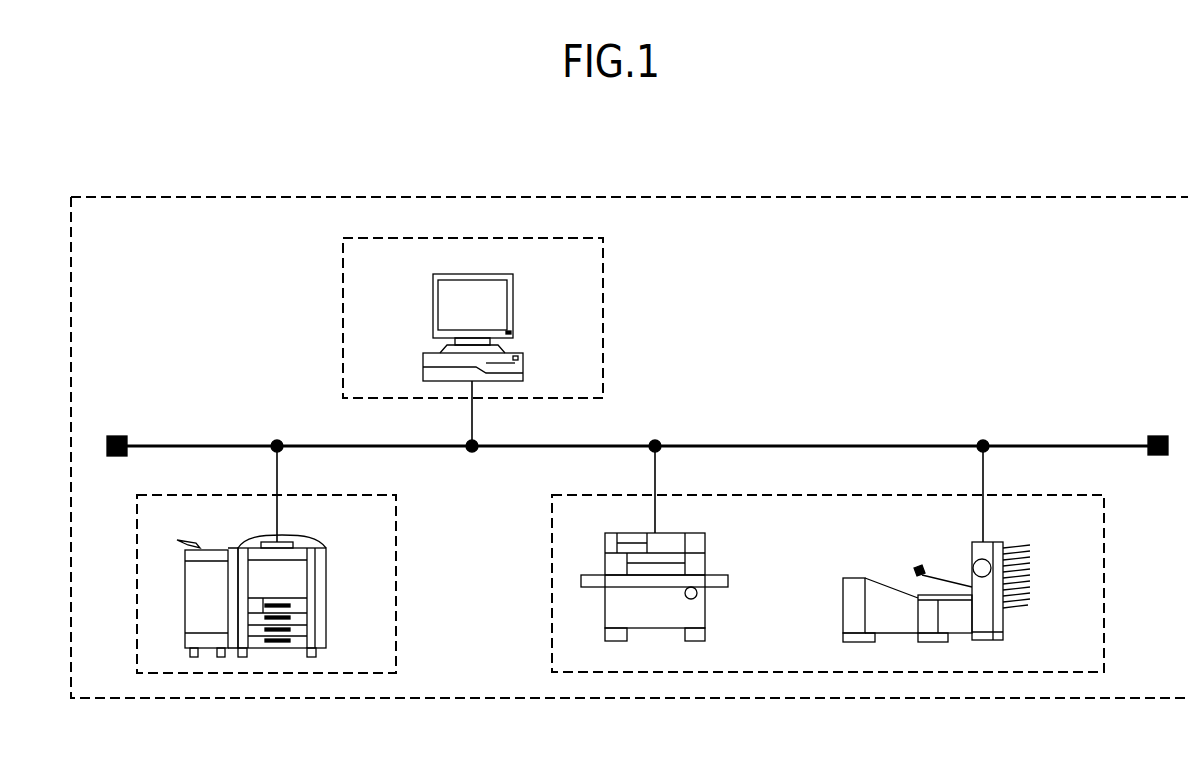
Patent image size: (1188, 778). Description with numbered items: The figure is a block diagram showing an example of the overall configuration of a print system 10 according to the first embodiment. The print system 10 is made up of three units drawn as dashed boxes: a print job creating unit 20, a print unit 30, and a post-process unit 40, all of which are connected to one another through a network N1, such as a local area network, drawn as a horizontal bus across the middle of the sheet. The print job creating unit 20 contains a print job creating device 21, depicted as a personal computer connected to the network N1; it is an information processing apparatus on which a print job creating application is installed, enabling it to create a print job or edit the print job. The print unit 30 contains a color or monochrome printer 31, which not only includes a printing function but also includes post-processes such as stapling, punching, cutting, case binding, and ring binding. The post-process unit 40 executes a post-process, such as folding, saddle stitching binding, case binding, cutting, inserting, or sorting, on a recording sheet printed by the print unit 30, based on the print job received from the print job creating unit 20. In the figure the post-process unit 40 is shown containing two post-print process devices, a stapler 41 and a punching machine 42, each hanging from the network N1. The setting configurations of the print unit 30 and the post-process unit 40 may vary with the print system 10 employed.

The print system 10 is at (1114, 194).
The print job creating unit 20 is at (604, 265).
The print job creating device 21 is at (513, 315).
The print unit 30 is at (398, 537).
The printer 31 is at (326, 603).
The post-process unit 40 is at (1106, 533).
The stapler 41 is at (705, 562).
The punching machine 42 is at (1005, 548).
The network N1 is at (1080, 444).